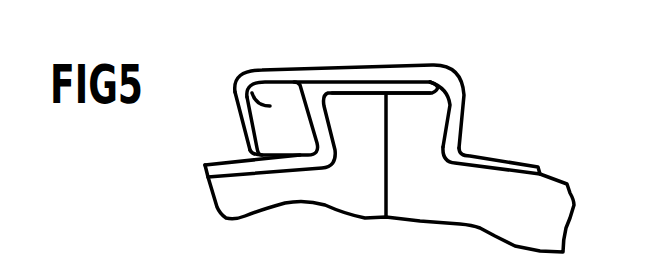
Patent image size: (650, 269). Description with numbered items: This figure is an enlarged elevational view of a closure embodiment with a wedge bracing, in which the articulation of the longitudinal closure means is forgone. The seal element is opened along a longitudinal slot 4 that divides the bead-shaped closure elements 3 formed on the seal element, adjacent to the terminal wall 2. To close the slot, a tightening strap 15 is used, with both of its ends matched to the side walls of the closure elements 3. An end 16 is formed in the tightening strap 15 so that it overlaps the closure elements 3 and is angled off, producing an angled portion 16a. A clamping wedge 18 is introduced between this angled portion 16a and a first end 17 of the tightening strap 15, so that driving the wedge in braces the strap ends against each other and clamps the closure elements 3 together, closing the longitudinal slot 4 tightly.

The terminal wall 2 is at (487, 214).
The bead-shaped closure elements 3 is at (343, 105).
The longitudinal slot 4 is at (389, 169).
The tightening strap 15 is at (478, 158).
The end 16 is at (277, 75).
The angled portion 16a is at (250, 132).
The first end 17 is at (362, 88).
The clamping wedge 18 is at (240, 83).